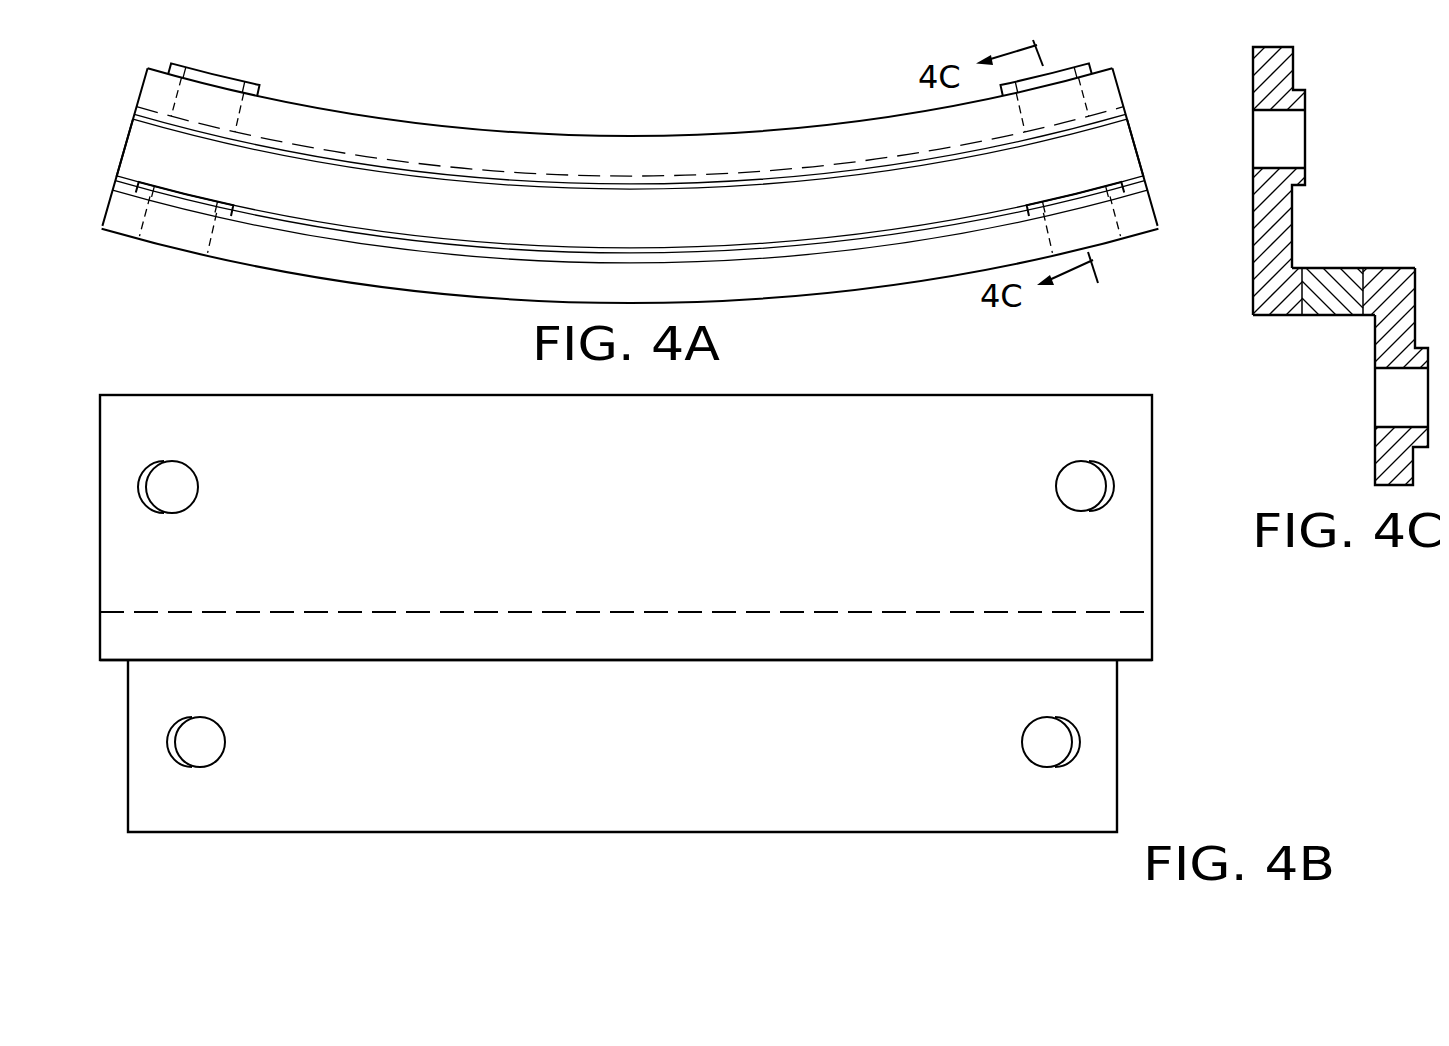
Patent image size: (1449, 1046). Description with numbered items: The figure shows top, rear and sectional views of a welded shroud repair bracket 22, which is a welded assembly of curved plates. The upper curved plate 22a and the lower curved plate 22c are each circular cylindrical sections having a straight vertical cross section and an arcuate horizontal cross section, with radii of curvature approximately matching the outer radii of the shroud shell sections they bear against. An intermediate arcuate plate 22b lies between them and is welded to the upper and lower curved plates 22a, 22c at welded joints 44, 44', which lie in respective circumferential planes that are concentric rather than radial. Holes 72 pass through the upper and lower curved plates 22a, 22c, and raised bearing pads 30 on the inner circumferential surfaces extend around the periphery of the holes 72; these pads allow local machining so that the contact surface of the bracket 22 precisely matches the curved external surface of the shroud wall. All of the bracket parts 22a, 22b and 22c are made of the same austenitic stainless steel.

In FIG. 4A, the bracket 22 is at (653, 186).
In FIG. 4B, the bracket 22 is at (669, 614).
In FIG. 4C, the bracket 22 is at (1351, 260).
In FIG. 4A, the upper curved plate 22a is at (777, 277).
In FIG. 4B, the upper curved plate 22a is at (315, 438).
In FIG. 4C, the upper curved plate 22a is at (1295, 210).
In FIG. 4A, the intermediate arcuate plate 22b is at (667, 223).
In FIG. 4B, the intermediate arcuate plate 22b is at (1135, 647).
In FIG. 4C, the intermediate arcuate plate 22b is at (1322, 316).
In FIG. 4A, the lower curved plate 22c is at (447, 141).
In FIG. 4B, the lower curved plate 22c is at (322, 810).
In FIG. 4C, the lower curved plate 22c is at (1375, 462).
In FIG. 4A, the raised bearing pads 30 is at (238, 78).
In FIG. 4C, the raised bearing pads 30 is at (1298, 92).
In FIG. 4A, the welded joint 44 is at (656, 196).
In FIG. 4C, the welded joint 44 is at (1396, 269).
In FIG. 4A, the welded joint 44' is at (668, 131).
In FIG. 4C, the welded joint 44' is at (1344, 254).
In FIG. 4B, the holes 72 is at (1058, 505).